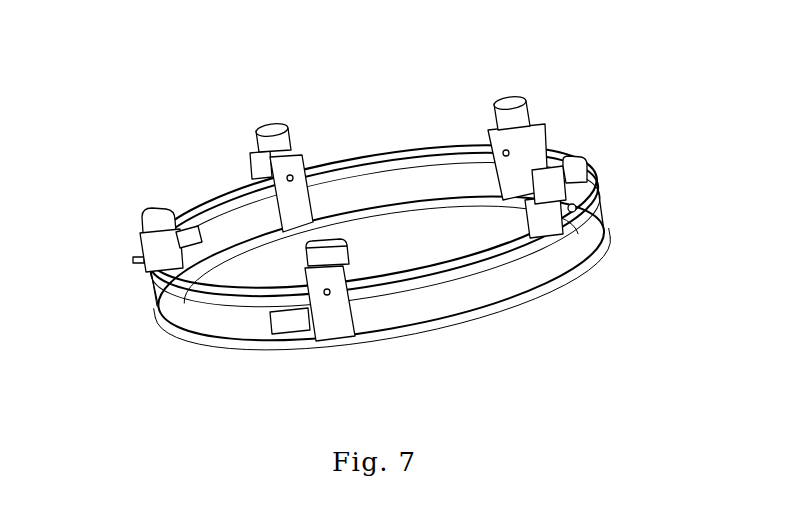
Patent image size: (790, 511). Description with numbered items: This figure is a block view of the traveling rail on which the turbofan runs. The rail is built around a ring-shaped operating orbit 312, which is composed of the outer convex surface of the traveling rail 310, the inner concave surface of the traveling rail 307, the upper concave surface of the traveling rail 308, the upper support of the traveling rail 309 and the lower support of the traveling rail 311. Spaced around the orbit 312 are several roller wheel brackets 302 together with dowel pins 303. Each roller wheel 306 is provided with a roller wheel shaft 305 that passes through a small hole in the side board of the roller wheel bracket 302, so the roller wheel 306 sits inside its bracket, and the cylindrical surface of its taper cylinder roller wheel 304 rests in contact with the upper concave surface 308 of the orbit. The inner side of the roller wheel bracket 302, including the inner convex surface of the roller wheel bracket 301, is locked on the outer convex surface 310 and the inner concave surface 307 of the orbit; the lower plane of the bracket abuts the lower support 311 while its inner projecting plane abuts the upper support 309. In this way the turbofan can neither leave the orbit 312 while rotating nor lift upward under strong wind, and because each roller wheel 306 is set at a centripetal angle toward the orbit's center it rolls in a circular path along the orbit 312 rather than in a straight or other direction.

The inner convex surface of the roller wheel bracket 301 is at (155, 307).
The roller wheel bracket 302 is at (150, 300).
The dowel pin 303 is at (142, 217).
The taper cylinder roller wheel 304 is at (163, 247).
The roller wheel shaft 305 is at (190, 222).
The roller wheel 306 is at (290, 165).
The inner concave surface of the traveling rail 307 is at (480, 180).
The upper concave surface of the traveling rail 308 is at (578, 180).
The upper support of the traveling rail 309 is at (642, 170).
The outer convex surface of the traveling rail 310 is at (532, 272).
The lower support of the traveling rail 311 is at (512, 297).
The operating orbit 312 is at (298, 320).